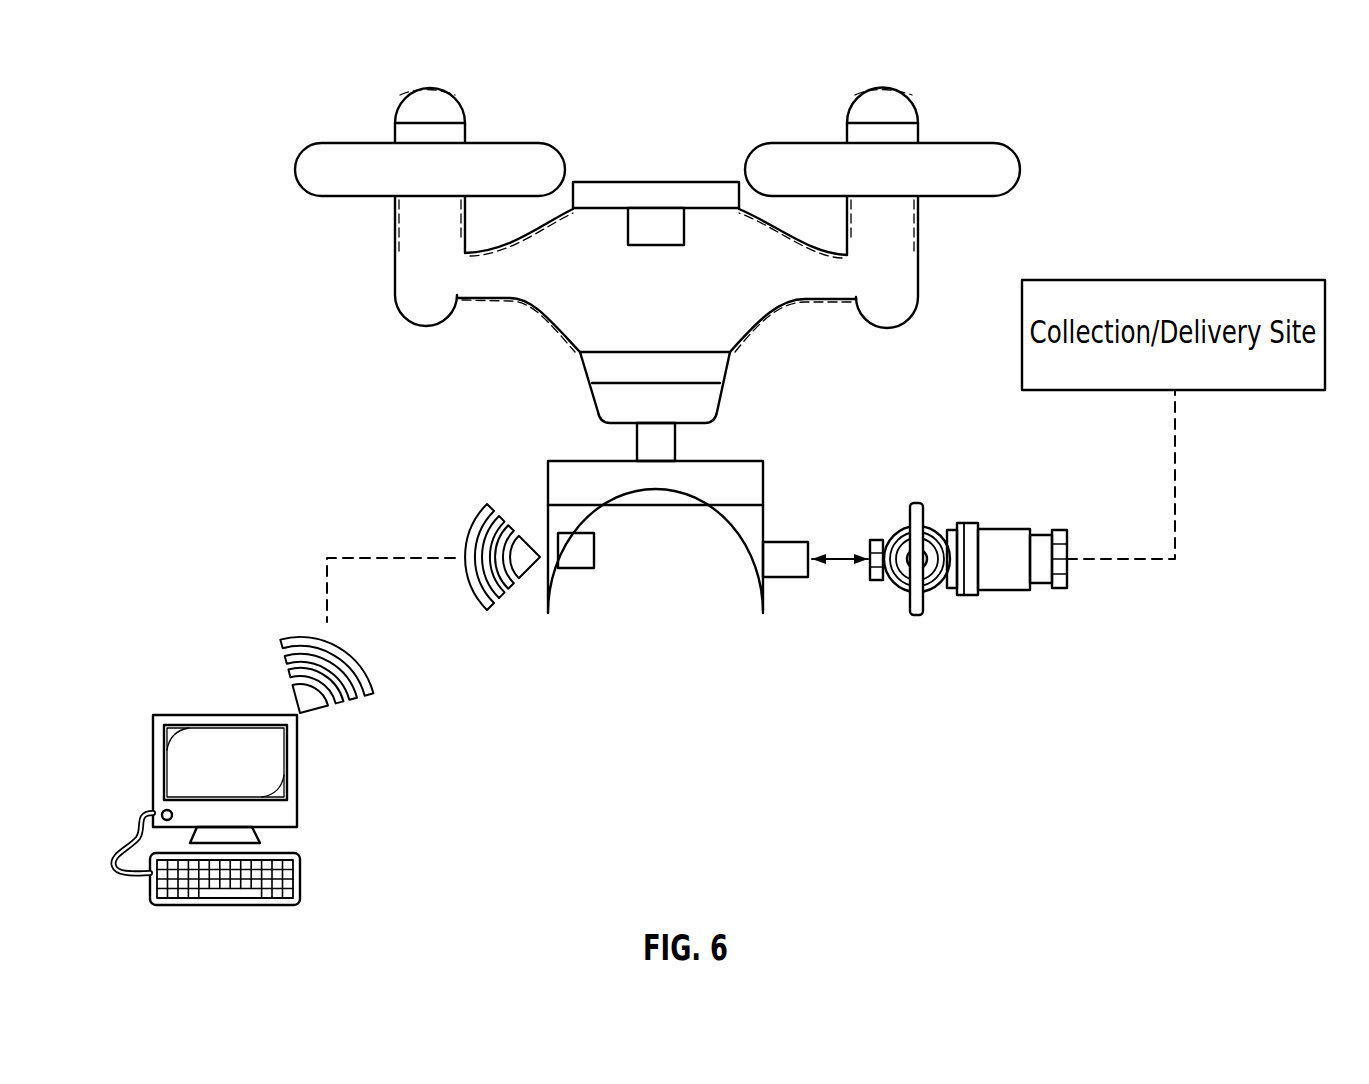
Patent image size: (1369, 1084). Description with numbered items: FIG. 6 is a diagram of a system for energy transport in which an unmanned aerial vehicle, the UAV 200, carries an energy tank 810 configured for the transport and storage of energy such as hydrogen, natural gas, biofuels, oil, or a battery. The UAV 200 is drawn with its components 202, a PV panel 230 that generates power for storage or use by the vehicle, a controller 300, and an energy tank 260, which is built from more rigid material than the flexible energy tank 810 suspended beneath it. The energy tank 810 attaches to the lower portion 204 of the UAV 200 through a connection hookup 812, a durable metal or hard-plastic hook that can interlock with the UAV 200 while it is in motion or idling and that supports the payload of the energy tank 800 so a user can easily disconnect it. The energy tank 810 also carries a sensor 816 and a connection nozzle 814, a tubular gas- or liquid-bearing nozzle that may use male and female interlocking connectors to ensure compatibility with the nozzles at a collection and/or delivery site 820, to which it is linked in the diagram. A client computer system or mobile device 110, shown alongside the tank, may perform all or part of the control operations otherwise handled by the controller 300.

The energy tank 800 is at (295, 78).
The UAV 200 is at (1058, 178).
The wings 202 is at (288, 166).
The PV panel 230 is at (603, 180).
The controller 300 is at (658, 228).
The lower portion 204 is at (553, 343).
The energy tank 260 is at (705, 375).
The connection hookup 812 is at (676, 450).
The energy tank 810 is at (714, 745).
The sensor 816 is at (576, 568).
The connection nozzle 814 is at (785, 578).
The collection and/or delivery site 820 is at (972, 597).
The device 110 is at (160, 703).